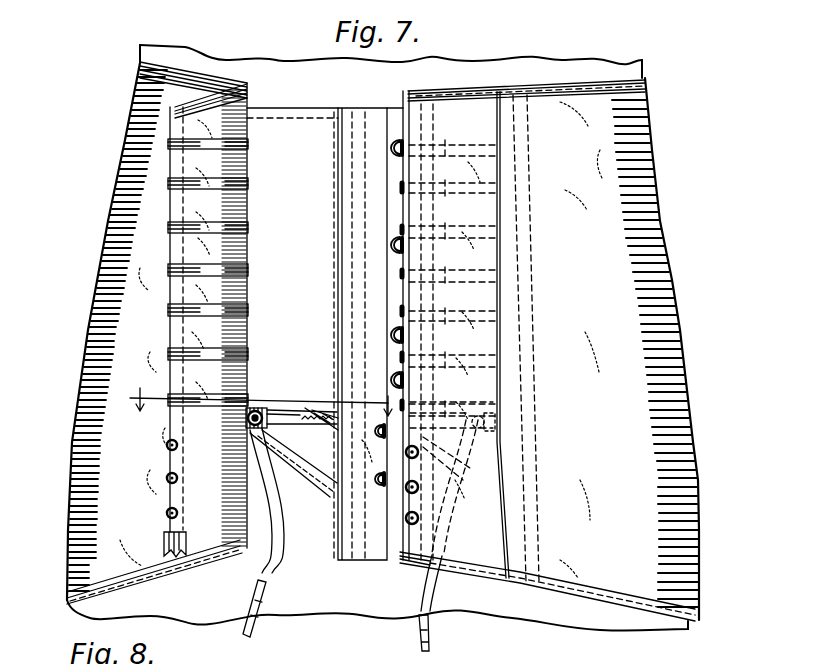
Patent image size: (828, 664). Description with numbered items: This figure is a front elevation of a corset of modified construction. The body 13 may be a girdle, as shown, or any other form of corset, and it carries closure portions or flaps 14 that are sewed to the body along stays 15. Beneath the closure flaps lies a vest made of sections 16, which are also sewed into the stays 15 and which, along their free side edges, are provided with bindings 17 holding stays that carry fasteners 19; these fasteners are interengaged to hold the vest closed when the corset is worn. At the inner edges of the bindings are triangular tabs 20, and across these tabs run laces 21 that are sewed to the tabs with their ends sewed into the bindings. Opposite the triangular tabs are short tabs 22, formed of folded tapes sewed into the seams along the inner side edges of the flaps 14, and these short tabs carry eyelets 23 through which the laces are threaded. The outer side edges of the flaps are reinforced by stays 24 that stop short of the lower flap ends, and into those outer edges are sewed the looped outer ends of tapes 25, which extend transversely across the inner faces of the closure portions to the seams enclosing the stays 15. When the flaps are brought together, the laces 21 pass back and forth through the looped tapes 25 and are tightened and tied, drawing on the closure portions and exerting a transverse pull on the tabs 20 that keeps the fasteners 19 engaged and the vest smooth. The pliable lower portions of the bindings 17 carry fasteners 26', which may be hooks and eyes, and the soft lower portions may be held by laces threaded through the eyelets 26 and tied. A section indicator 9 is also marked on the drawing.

The section line 9 is at (260, 392).
The body 13 is at (656, 212).
The closure portions or flaps 14 is at (215, 128).
The stays 15 is at (515, 240).
The vest sections 16 is at (317, 135).
The bindings 17 is at (398, 125).
The fasteners 19 is at (386, 330).
The triangular tabs 20 is at (328, 403).
The laces 21 is at (280, 528).
The short tabs 22 is at (268, 408).
The eyelets 23 is at (256, 407).
The stays 24 is at (168, 418).
The tapes 25 is at (172, 192).
The eyelets 26 is at (278, 482).
The fasteners 26' is at (341, 455).